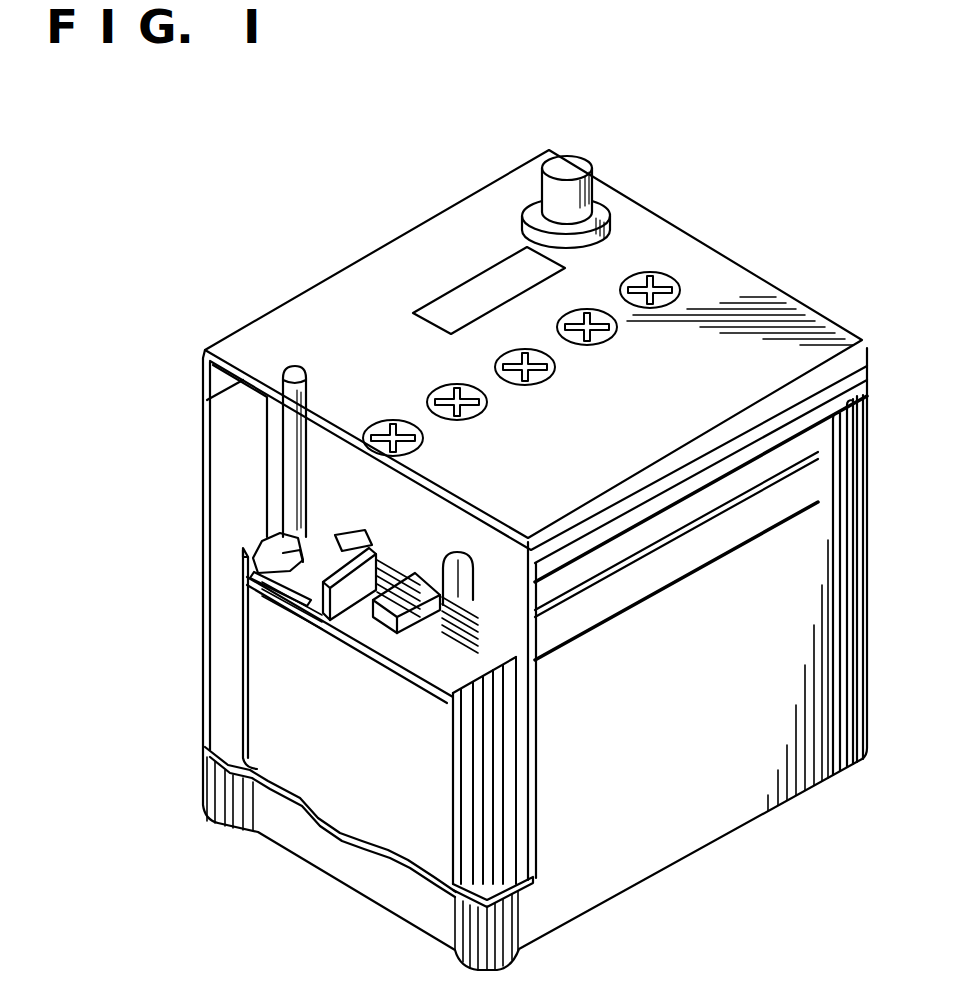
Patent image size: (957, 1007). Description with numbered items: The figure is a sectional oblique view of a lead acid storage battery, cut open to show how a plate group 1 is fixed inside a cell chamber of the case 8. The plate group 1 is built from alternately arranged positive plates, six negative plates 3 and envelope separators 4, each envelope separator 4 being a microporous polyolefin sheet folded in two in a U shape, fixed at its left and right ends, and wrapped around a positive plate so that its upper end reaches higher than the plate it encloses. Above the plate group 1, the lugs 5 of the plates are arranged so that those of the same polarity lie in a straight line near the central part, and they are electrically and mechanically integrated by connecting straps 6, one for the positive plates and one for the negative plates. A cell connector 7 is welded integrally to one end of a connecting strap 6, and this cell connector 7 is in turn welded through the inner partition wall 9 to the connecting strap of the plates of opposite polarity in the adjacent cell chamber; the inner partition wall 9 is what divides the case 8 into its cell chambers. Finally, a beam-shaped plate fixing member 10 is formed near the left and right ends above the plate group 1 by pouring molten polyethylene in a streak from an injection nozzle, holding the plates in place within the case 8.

The plate group 1 is at (243, 573).
The negative plates 3 is at (308, 782).
The envelope separators 4 is at (460, 858).
The lugs 5 is at (380, 630).
The connecting straps 6 is at (357, 550).
The cell connector 7 is at (470, 598).
The case 8 is at (226, 460).
The inner partition wall 9 is at (483, 553).
The plate fixing member 10 is at (440, 705).